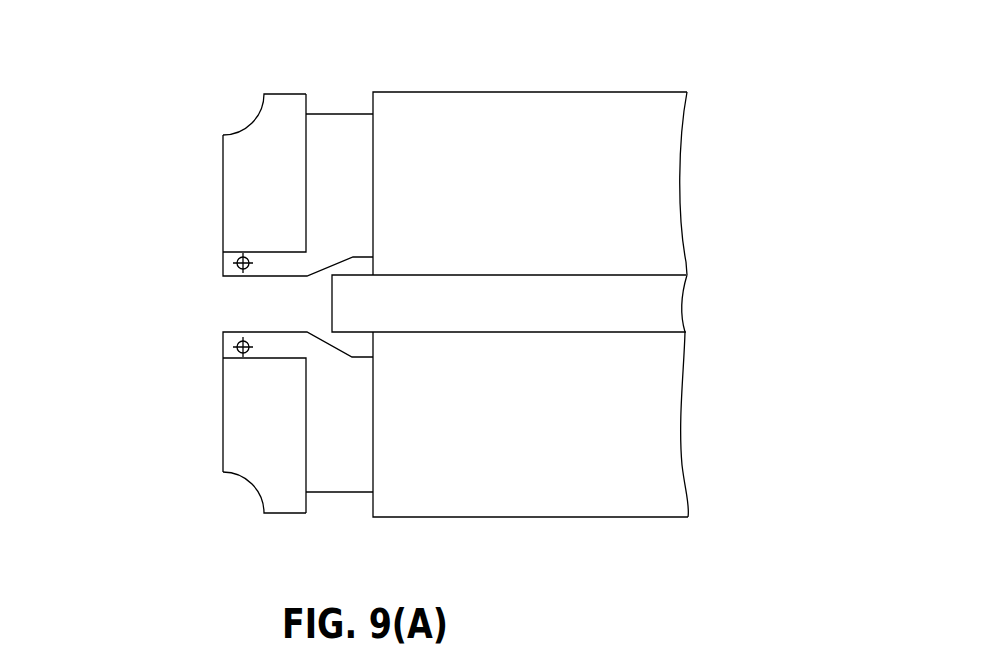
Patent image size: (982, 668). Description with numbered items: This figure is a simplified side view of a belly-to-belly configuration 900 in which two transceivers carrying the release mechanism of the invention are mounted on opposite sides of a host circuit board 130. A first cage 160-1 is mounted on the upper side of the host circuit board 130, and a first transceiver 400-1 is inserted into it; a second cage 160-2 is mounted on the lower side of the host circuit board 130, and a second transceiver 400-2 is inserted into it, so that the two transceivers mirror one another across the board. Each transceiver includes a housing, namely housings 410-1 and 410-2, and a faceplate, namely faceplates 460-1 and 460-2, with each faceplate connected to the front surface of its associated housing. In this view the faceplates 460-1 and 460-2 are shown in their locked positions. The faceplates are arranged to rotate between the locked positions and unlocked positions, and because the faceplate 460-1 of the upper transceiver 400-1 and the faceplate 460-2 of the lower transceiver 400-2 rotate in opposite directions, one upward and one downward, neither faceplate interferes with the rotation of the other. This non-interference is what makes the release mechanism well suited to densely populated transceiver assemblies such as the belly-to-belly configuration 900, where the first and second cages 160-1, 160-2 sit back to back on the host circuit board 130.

The belly-to-belly configuration 900 is at (123, 72).
The first transceiver 400-1 is at (254, 149).
The second transceiver 400-2 is at (249, 449).
The faceplate 460-1 is at (282, 100).
The faceplate 460-2 is at (280, 500).
The housing 410-1 is at (352, 122).
The housing 410-2 is at (342, 495).
The first cage 160-1 is at (562, 197).
The second cage 160-2 is at (562, 448).
The host circuit board 130 is at (520, 316).